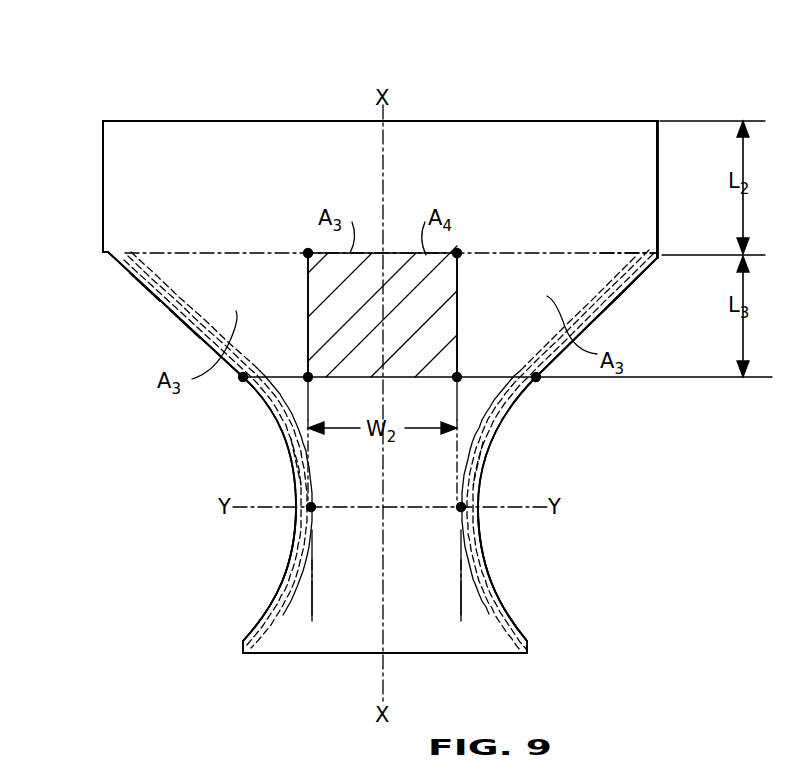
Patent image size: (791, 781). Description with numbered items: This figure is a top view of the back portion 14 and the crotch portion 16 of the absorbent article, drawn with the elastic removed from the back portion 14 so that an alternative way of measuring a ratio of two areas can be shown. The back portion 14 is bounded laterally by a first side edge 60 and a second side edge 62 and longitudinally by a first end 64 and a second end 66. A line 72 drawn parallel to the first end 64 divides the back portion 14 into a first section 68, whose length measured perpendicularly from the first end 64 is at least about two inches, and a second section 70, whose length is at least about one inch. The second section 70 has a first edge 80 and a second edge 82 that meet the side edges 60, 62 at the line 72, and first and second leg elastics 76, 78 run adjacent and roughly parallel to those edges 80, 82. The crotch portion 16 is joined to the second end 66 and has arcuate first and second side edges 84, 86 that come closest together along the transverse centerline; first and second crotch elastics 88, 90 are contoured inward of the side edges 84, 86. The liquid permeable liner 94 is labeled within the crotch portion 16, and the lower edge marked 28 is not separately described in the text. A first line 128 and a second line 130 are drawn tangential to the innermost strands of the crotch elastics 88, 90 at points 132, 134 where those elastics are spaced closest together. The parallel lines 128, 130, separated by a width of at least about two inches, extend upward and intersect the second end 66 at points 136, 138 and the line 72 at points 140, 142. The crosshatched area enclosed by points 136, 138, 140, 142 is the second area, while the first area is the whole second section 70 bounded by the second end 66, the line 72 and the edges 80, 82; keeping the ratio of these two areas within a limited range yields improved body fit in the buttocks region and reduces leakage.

The back portion 14 is at (74, 56).
The crotch portion 16 is at (570, 545).
The bottom edge 28 is at (472, 653).
The first side edge 60 is at (103, 195).
The second side edge 62 is at (660, 187).
The first end 64 is at (496, 120).
The second end 66 is at (498, 377).
The first section 68 is at (580, 120).
The second section 70 is at (600, 274).
The line 72 is at (553, 250).
The first leg elastic 76 is at (160, 301).
The second leg elastic 78 is at (608, 310).
The first edge 80 is at (186, 323).
The second edge 82 is at (635, 298).
The first side edge 84 is at (287, 563).
The second side edge 86 is at (496, 572).
The first crotch elastic 88 is at (286, 452).
The second crotch elastic 90 is at (488, 458).
The liquid permeable liner 94 is at (435, 594).
The first line 128 is at (308, 300).
The second line 130 is at (458, 312).
The point 132 is at (312, 504).
The point 134 is at (460, 504).
The point 136 is at (308, 374).
The point 138 is at (458, 374).
The point 140 is at (308, 250).
The point 142 is at (458, 250).